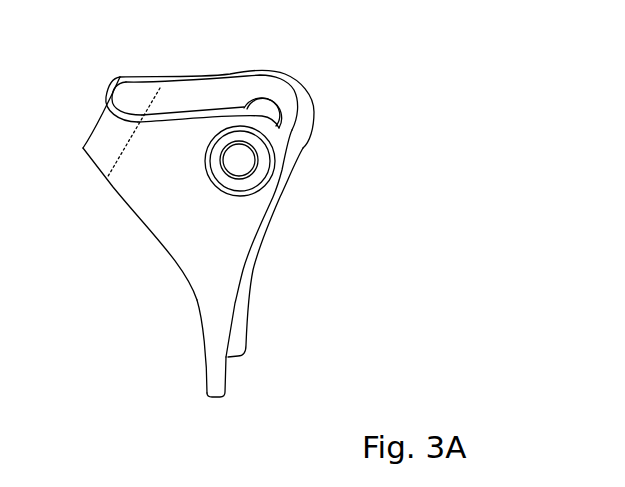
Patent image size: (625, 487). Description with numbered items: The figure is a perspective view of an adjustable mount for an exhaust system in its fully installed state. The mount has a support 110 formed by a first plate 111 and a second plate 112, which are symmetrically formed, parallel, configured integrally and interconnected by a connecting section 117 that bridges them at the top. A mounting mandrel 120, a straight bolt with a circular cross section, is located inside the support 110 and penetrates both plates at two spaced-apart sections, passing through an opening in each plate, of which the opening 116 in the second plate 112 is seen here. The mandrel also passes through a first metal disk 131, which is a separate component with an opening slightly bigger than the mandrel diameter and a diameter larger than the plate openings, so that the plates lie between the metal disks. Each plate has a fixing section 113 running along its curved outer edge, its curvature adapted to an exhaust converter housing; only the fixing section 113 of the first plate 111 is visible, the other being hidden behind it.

The support 110 is at (245, 369).
The first plate 111 is at (207, 333).
The second plate 112 is at (243, 308).
The fixing section 113 is at (196, 311).
The opening 116 is at (300, 143).
The connecting section 117 is at (118, 81).
The mounting mandrel 120 is at (238, 175).
The first metal disk 131 is at (210, 159).